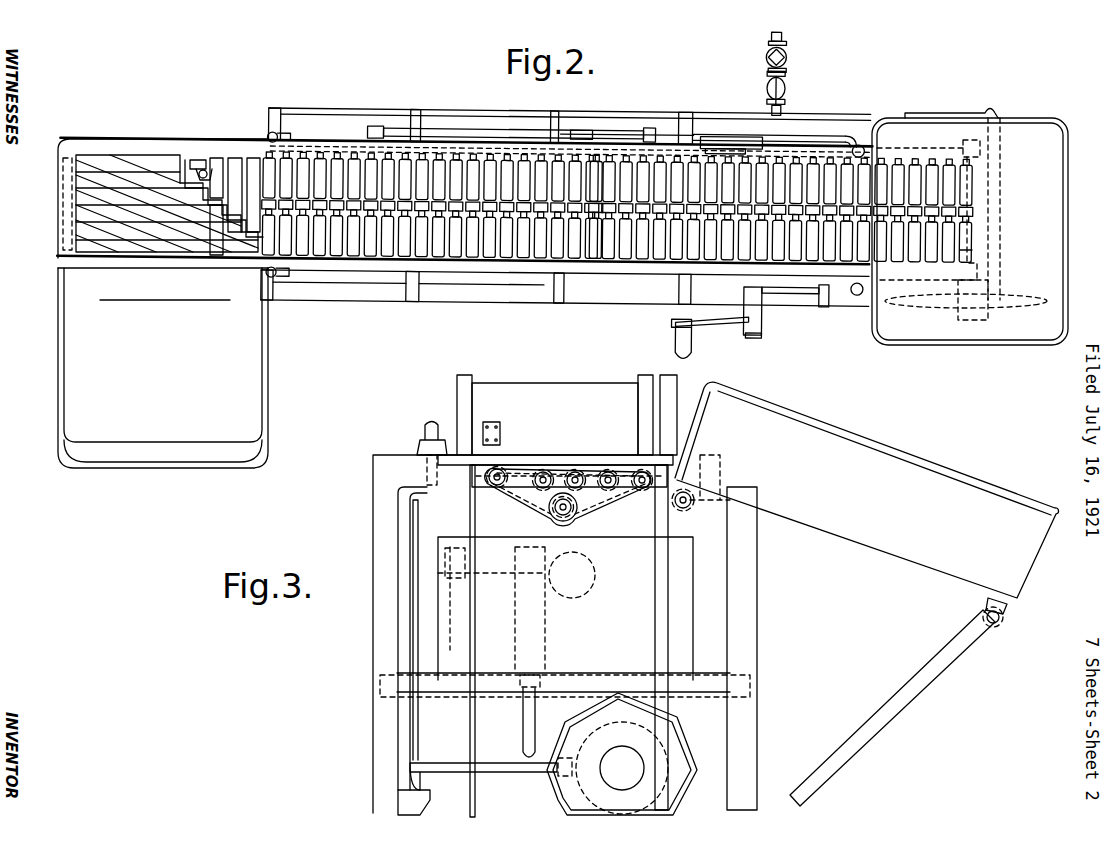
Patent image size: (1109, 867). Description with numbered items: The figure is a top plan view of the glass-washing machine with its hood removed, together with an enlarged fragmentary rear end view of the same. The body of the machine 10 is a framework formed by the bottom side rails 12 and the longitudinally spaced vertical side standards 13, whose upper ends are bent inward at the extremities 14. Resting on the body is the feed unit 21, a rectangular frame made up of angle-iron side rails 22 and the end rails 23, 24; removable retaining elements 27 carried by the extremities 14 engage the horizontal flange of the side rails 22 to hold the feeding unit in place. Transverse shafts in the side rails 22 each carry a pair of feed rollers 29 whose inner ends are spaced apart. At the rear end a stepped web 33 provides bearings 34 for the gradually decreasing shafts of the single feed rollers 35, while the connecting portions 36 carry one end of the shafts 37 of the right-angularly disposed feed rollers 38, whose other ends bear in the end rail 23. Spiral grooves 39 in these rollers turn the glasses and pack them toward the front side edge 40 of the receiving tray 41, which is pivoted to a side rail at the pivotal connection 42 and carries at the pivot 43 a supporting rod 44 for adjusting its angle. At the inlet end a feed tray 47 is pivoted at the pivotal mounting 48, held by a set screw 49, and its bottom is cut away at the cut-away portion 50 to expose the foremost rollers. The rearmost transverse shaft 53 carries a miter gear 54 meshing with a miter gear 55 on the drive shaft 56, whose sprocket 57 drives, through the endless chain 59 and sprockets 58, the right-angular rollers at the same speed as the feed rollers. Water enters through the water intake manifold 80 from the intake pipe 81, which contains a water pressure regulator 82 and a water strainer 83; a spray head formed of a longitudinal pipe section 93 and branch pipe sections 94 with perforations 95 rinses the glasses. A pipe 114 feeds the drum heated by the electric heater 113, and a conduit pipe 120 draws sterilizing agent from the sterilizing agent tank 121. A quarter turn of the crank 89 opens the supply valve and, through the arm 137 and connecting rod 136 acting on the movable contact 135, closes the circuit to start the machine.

In FIG. 2, the body of the machine 10 is at (607, 300).
In FIG. 2, the bottom side rails 12 is at (460, 120).
In FIG. 2, the vertical side standards 13 is at (414, 300).
In FIG. 3, the vertical side standards 13 is at (373, 632).
In FIG. 2, the inwardly bent extremities 14 is at (398, 300).
In FIG. 2, the feed unit 21 is at (600, 158).
In FIG. 2, the side rails 22 is at (478, 272).
In FIG. 2, the end rail 23 is at (58, 218).
In FIG. 2, the end rail 24 is at (970, 232).
In FIG. 2, the removable retaining elements 27 is at (278, 135).
In FIG. 3, the removable retaining elements 27 is at (420, 437).
In FIG. 2, the feed rollers 29 is at (956, 165).
In FIG. 2, the stepped web 33 is at (162, 175).
In FIG. 2, the bearings 34 is at (246, 252).
In FIG. 2, the single feed rollers 35 is at (252, 160).
In FIG. 2, the connecting portions 36 is at (178, 252).
In FIG. 2, the shafts 37 is at (63, 192).
In FIG. 3, the shafts 37 is at (565, 492).
In FIG. 2, the feed rollers 38 is at (100, 208).
In FIG. 2, the spiral grooves 39 is at (140, 252).
In FIG. 2, the front side edge 40 is at (268, 373).
In FIG. 2, the receiving tray 41 is at (165, 332).
In FIG. 3, the receiving tray 41 is at (867, 490).
In FIG. 3, the pivotal connection 42 is at (695, 500).
In FIG. 3, the pivot 43 is at (1000, 617).
In FIG. 3, the supporting rod 44 is at (890, 712).
In FIG. 2, the feed tray 47 is at (1060, 272).
In FIG. 2, the pivotal mounting 48 is at (980, 150).
In FIG. 2, the set screw 49 is at (990, 324).
In FIG. 2, the cut-away portion 50 is at (972, 250).
In FIG. 2, the rearmost transverse shaft 53 is at (202, 160).
In FIG. 2, the miter gear 54 is at (205, 170).
In FIG. 2, the miter gear 55 is at (195, 160).
In FIG. 2, the drive shaft 56 is at (95, 170).
In FIG. 3, the drive shaft 56 is at (500, 470).
In FIG. 3, the sprocket 57 is at (544, 472).
In FIG. 3, the sprockets 58 is at (578, 472).
In FIG. 3, the endless chain 59 is at (612, 472).
In FIG. 2, the water intake manifold 80 is at (634, 135).
In FIG. 3, the water intake manifold 80 is at (398, 795).
In FIG. 2, the intake pipe 81 is at (770, 102).
In FIG. 2, the water pressure regulator 82 is at (766, 82).
In FIG. 2, the water strainer 83 is at (786, 50).
In FIG. 2, the crank 89 is at (726, 322).
In FIG. 2, the pipe section 93 is at (638, 258).
In FIG. 2, the branch pipe sections 94 is at (812, 170).
In FIG. 2, the perforations 95 is at (596, 258).
In FIG. 3, the electric heater 113 is at (678, 762).
In FIG. 3, the pipe 114 is at (512, 772).
In FIG. 3, the conduit pipe 120 is at (523, 722).
In FIG. 3, the sterilizing agent tank 121 is at (579, 586).
In FIG. 2, the movable contact 135 is at (838, 301).
In FIG. 2, the connecting rod 136 is at (800, 290).
In FIG. 2, the arm 137 is at (762, 310).